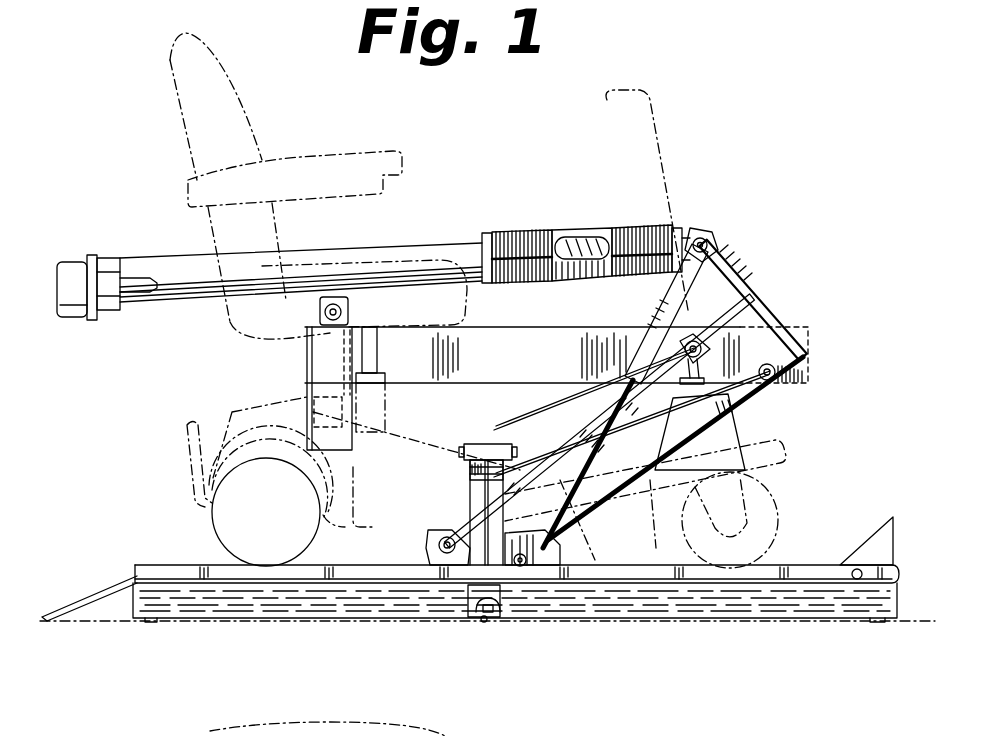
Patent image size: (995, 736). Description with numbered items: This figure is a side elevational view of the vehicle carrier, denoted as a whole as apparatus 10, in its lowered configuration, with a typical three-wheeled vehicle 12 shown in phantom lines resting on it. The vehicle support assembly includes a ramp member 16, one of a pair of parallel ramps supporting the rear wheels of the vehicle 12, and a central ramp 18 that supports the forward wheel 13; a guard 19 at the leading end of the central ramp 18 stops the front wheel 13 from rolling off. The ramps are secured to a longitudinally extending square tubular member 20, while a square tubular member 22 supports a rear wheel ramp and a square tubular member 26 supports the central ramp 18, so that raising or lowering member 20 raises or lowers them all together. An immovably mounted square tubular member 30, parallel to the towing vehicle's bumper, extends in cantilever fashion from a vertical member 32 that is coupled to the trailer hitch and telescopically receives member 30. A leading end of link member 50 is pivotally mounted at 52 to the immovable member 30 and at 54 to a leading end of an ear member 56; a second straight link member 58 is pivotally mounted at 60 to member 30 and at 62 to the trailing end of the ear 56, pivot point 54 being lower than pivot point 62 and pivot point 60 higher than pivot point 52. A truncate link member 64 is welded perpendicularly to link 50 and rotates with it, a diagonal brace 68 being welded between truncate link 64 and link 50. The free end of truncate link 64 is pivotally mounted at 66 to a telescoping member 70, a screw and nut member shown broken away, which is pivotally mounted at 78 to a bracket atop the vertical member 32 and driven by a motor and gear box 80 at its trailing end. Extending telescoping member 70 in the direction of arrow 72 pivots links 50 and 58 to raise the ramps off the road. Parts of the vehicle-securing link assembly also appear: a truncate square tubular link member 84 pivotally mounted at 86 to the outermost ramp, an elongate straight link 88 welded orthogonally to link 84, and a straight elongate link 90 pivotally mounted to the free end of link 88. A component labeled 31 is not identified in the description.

The apparatus 10 is at (793, 132).
The three-wheeled vehicle 12 is at (664, 118).
The forward wheel 13 is at (747, 500).
The ramp member 16 is at (175, 572).
The central ramp 18 is at (795, 565).
The guard 19 is at (877, 532).
The square tubular member 20 is at (472, 620).
The square tubular member 22 is at (252, 607).
The square tubular member 26 is at (720, 605).
The immovable square tubular member 30 is at (555, 335).
The drive wheel 31 is at (320, 472).
The vertical member 32 is at (305, 365).
The link member 50 is at (750, 392).
The pivot point 52 is at (777, 373).
The pivot point 54 is at (540, 578).
The ear member 56 is at (548, 570).
The second link member 58 is at (588, 423).
The pivot point 60 is at (763, 355).
The pivot point 62 is at (450, 553).
The truncate link member 64 is at (755, 293).
The pivot point 66 is at (715, 238).
The brace 68 is at (672, 327).
The telescoping member 70 is at (482, 224).
The directional arrow 72 is at (598, 210).
The pivot point 78 is at (350, 312).
The motor and gear box 80 is at (108, 262).
The truncate square tubular link member 84 is at (478, 495).
The pivot point 86 is at (528, 578).
The elongate straight link 88 is at (500, 442).
The straight elongate link 90 is at (470, 466).